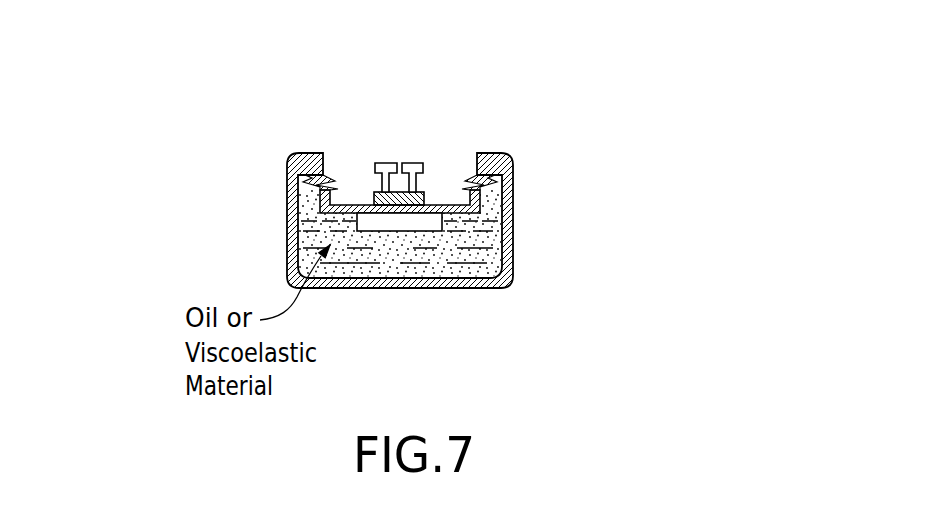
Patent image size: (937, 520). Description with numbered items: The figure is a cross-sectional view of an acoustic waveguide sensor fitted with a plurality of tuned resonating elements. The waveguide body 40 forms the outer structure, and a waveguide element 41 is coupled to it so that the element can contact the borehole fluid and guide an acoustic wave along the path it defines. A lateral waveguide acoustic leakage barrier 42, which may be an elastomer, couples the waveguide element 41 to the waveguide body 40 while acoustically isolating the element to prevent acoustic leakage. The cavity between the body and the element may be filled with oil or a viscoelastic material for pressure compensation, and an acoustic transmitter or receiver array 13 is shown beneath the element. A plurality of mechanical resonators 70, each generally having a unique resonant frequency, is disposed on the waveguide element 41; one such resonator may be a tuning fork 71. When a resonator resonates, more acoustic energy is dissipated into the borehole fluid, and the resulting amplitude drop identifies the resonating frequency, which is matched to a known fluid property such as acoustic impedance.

The mechanical resonator 70 is at (380, 157).
The tuning fork 71 is at (412, 163).
The lateral waveguide acoustic leakage barrier 42 is at (337, 159).
The waveguide body 40 is at (513, 233).
The waveguide element 41 is at (348, 215).
The acoustic transmitter or receiver array 13 is at (442, 232).